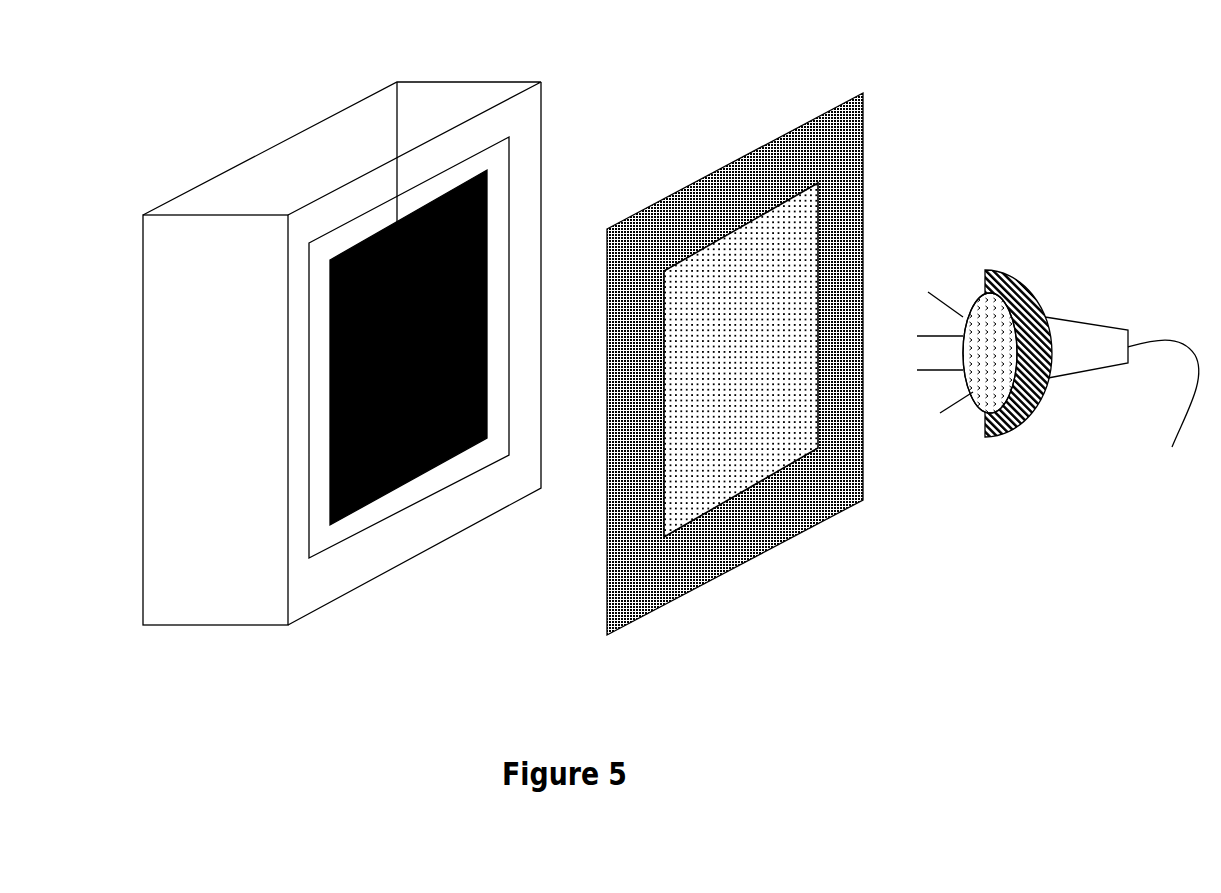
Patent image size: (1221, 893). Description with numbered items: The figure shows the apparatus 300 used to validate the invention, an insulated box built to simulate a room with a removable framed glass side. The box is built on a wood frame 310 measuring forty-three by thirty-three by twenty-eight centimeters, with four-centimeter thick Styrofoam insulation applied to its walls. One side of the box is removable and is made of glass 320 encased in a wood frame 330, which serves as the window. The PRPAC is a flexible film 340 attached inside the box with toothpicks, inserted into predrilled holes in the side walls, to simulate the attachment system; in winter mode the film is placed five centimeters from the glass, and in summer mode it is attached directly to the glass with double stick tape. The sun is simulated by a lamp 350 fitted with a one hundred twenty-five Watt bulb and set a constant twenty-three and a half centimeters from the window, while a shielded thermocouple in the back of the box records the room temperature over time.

The apparatus 300 is at (667, 339).
The wood frame 310 is at (288, 172).
The glass 320 is at (785, 425).
The wood frame 330 is at (675, 568).
The flexible film 340 is at (418, 475).
The lamp 350 is at (1038, 293).